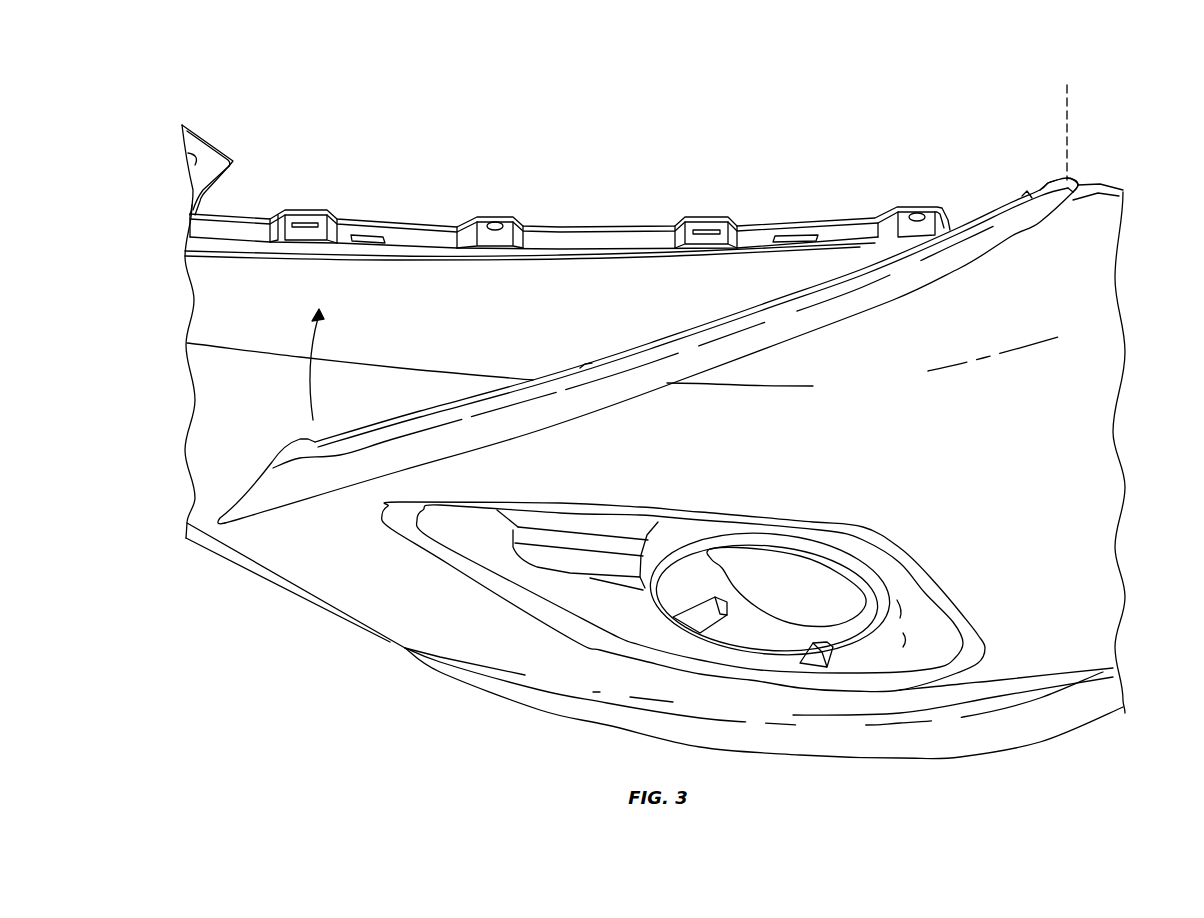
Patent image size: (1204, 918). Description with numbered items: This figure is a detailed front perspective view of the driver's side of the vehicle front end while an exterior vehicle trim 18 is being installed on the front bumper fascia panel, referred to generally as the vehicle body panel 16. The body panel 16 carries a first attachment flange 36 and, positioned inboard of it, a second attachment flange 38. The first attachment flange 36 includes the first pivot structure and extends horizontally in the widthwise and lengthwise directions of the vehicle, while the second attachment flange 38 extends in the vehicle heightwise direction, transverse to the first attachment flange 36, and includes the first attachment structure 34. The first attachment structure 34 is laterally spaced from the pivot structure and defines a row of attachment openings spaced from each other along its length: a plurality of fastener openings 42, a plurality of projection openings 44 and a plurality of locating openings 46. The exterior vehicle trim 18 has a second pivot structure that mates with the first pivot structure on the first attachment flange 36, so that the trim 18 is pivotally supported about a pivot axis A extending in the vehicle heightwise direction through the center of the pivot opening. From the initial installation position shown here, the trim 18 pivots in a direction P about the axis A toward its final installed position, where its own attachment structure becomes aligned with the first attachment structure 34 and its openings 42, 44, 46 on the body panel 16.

The vehicle body panel 16 is at (353, 603).
The exterior vehicle trim 18 is at (492, 437).
The first attachment structure 34 is at (558, 206).
The first attachment flange 36 is at (1073, 200).
The second attachment flange 38 is at (600, 227).
The fastener opening 42 is at (493, 222).
The projection opening 44 is at (308, 223).
The locating opening 46 is at (362, 235).
The pivot axis A is at (1068, 103).
The direction P is at (308, 364).